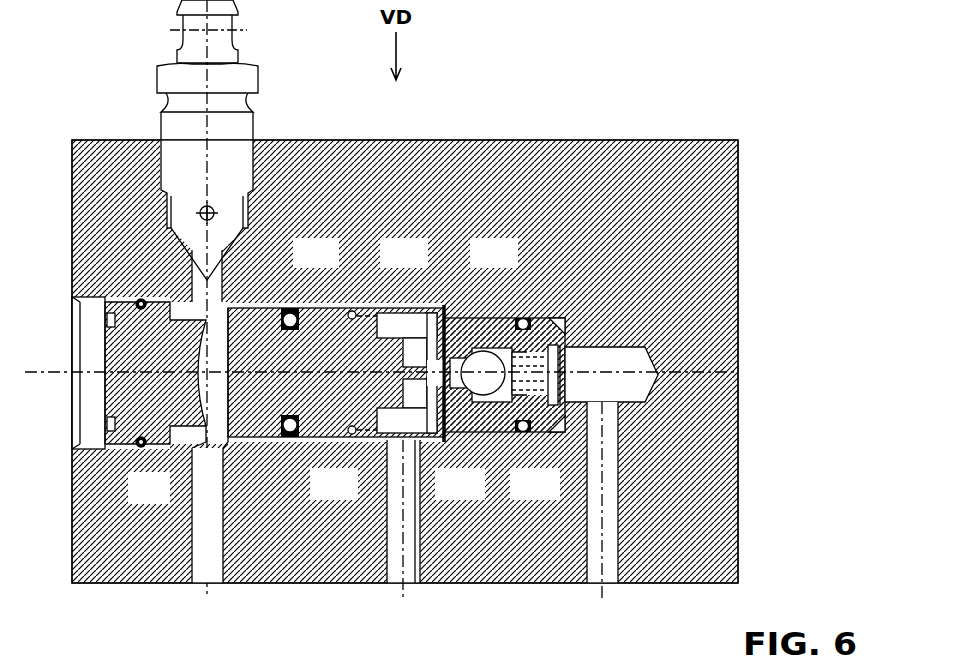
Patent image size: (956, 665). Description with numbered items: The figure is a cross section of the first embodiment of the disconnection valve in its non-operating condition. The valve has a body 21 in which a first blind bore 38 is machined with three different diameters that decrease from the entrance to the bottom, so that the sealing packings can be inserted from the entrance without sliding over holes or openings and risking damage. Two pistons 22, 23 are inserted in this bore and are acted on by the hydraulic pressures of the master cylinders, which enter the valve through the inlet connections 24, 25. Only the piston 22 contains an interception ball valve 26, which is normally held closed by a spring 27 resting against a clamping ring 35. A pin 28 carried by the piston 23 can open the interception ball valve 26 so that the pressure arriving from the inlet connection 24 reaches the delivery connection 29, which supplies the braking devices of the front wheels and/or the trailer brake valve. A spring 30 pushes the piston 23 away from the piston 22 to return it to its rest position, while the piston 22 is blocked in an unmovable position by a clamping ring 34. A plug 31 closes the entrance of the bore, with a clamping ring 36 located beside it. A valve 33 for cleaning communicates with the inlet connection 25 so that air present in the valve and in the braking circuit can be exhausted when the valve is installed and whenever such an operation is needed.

The body 21 is at (715, 253).
The piston 22 is at (498, 312).
The piston 23 is at (323, 318).
The inlet connection 24 is at (610, 577).
The inlet connection 25 is at (195, 573).
The interception ball valve 26 is at (484, 386).
The spring 27 is at (542, 397).
The pin 28 is at (424, 316).
The delivery connection 29 is at (398, 578).
The spring 30 is at (368, 438).
The plug 31 is at (117, 360).
The valve for cleaning 33 is at (240, 135).
The clamping ring 34 is at (415, 585).
The clamping ring 35 is at (553, 357).
The clamping ring 36 is at (105, 443).
The first blind bore 38 is at (185, 441).